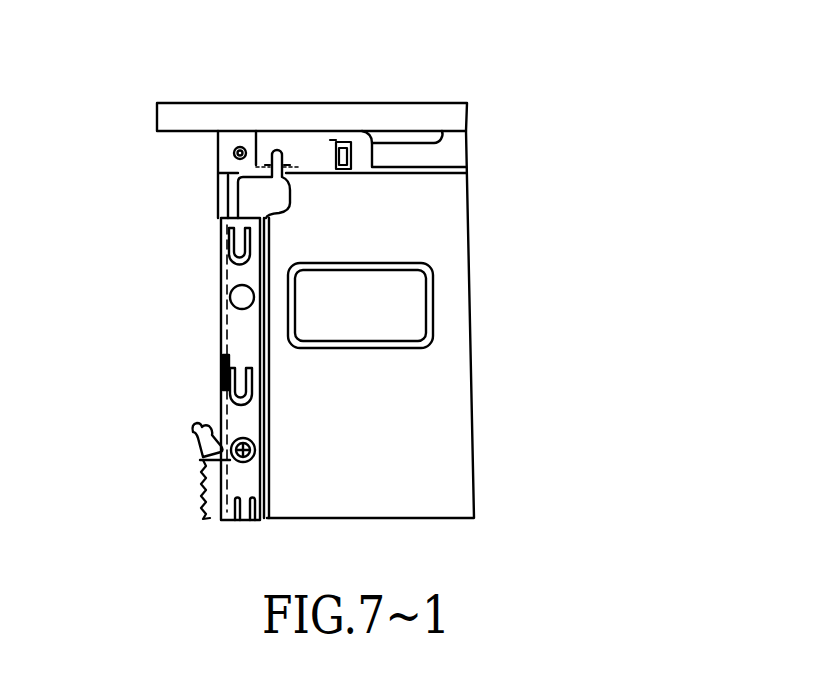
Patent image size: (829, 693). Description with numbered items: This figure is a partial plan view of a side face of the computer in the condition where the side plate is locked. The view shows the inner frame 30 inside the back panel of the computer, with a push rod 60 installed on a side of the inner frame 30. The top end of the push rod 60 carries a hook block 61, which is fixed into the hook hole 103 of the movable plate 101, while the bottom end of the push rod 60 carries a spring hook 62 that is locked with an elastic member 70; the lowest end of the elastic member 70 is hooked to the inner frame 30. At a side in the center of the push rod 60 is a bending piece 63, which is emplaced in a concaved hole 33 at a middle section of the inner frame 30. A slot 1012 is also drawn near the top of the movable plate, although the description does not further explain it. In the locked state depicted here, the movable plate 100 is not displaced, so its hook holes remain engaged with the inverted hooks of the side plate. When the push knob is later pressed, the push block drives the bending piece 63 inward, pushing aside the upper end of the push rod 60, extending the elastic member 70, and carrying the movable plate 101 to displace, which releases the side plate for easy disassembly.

The movable plate 100 is at (203, 113).
The movable plate 101 is at (313, 145).
The slot 1012 is at (348, 156).
The hook hole 103 is at (283, 160).
The inner frame 30 is at (217, 195).
The push rod 60 is at (223, 323).
The hook block 61 is at (275, 152).
The spring hook 62 is at (192, 428).
The bending piece 63 is at (247, 366).
The concaved hole 33 is at (223, 373).
The elastic member 70 is at (202, 483).